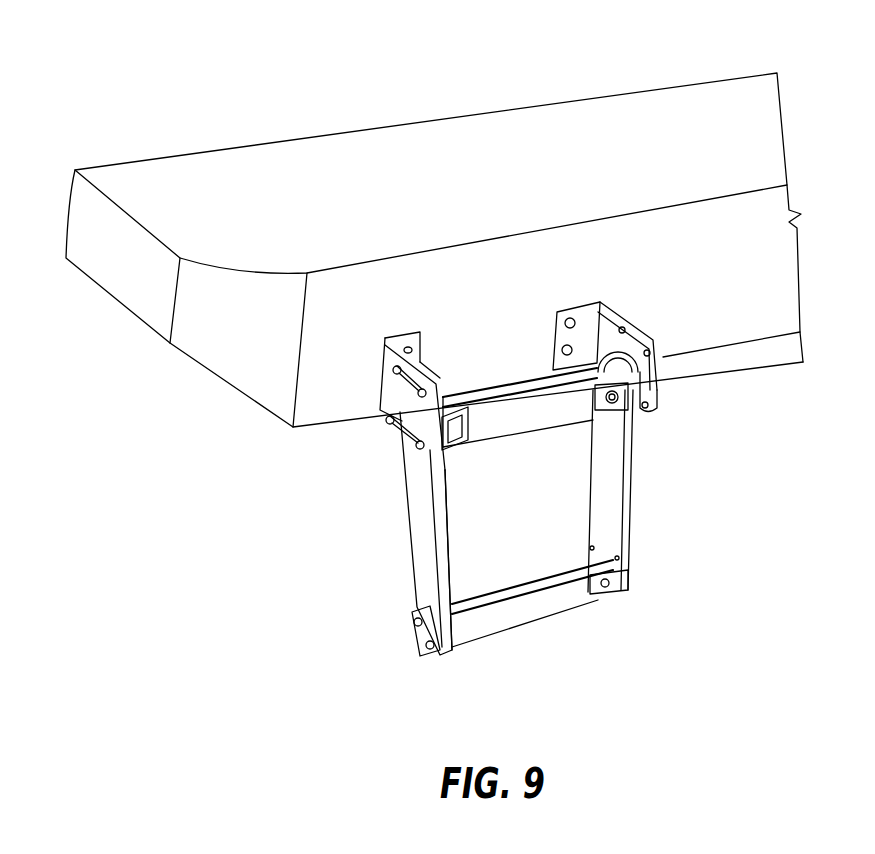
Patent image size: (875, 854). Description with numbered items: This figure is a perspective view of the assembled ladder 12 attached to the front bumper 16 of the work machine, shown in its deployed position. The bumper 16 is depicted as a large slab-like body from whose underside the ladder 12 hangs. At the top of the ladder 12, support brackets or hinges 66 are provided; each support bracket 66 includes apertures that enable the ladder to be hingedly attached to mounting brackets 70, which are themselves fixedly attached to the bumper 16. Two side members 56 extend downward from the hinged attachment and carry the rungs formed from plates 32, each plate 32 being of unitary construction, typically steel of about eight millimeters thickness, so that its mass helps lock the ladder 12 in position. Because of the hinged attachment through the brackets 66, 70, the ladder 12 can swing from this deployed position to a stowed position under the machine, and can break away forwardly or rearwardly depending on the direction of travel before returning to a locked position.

The ladder 12 is at (653, 502).
The front bumper 16 is at (775, 262).
The plate 32 is at (505, 445).
The vertical support bar 56 is at (422, 520).
The support bracket 66 is at (660, 400).
The mounting bracket 70 is at (386, 358).